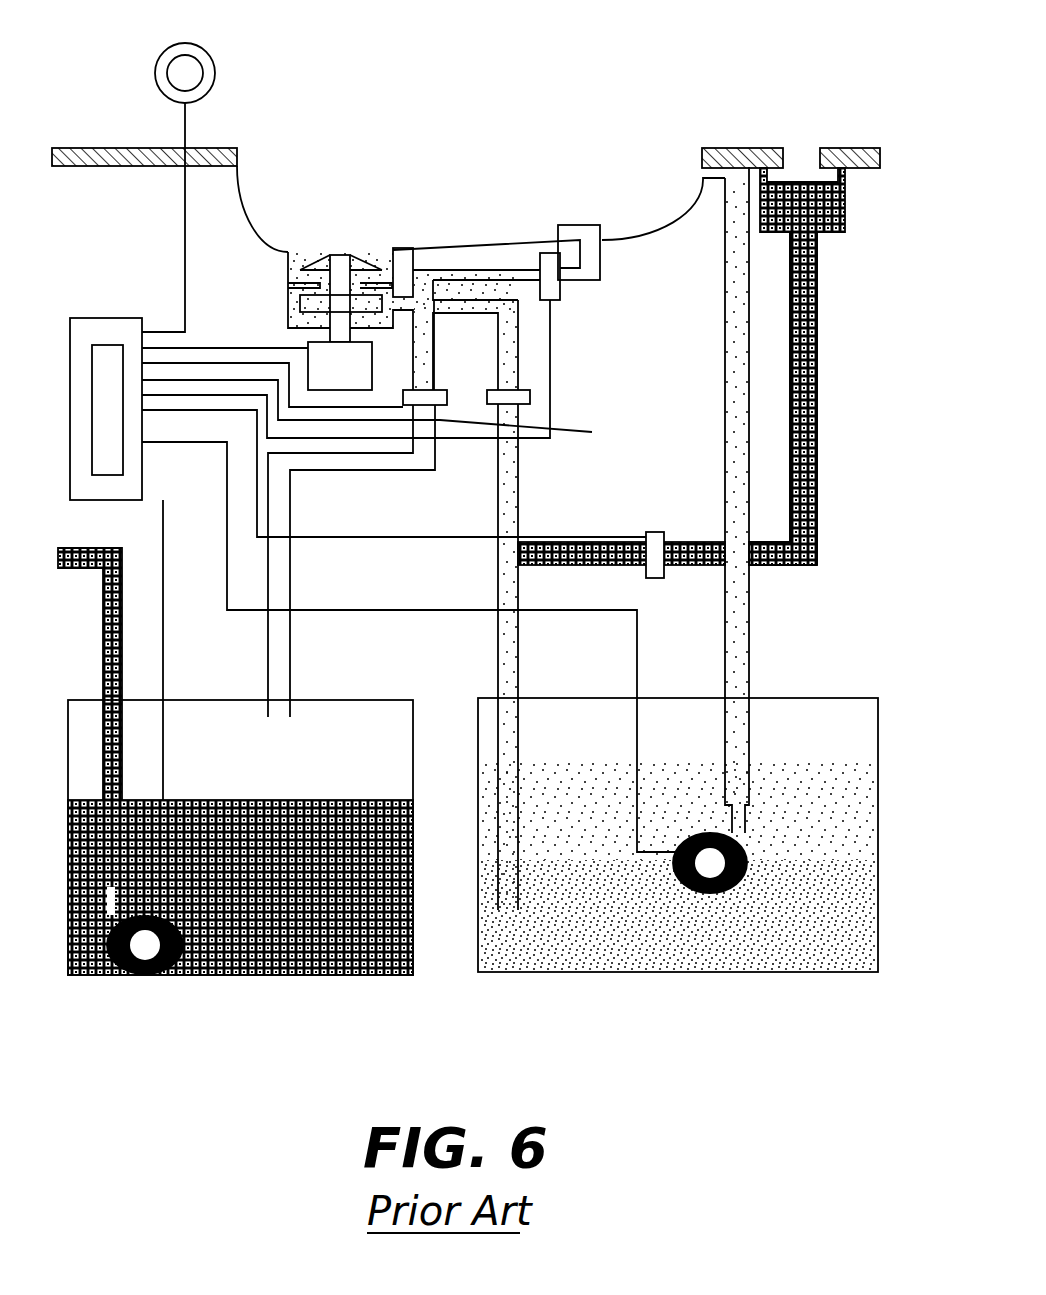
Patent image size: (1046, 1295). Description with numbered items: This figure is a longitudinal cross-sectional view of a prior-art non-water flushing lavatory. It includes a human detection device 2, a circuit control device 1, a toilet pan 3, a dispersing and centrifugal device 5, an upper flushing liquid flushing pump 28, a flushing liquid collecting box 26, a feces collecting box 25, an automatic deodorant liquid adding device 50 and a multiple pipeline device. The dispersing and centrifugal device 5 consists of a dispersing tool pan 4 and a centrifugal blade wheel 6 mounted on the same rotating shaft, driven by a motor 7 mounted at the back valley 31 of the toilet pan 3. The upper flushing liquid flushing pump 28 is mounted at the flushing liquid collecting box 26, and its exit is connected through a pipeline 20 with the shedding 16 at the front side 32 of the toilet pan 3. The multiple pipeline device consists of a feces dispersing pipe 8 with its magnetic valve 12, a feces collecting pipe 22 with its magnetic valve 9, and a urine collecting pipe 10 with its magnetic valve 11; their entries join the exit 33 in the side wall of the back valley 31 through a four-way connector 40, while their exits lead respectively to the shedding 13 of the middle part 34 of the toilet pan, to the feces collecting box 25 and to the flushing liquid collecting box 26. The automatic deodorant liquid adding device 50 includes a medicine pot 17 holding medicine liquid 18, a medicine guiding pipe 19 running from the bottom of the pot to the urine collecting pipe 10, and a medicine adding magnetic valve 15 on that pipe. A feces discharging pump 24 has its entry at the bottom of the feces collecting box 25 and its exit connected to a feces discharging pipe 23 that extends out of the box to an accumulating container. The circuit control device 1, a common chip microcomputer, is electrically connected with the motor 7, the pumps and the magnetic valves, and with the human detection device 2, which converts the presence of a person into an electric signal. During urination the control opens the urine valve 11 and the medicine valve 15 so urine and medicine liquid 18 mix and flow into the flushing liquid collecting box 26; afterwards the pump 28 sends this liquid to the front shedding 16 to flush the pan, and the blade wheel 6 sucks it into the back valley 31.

The circuit control device 1 is at (88, 318).
The human detection device 2 is at (163, 63).
The toilet pan 3 is at (250, 222).
The dispersing tool pan 4 is at (315, 270).
The dispersing and centrifugal device 5 is at (340, 252).
The centrifugal blade wheel 6 is at (372, 303).
The motor 7 is at (367, 375).
The feces dispersing pipe 8 is at (447, 267).
The magnetic valve of the feces collecting pipe 9 is at (435, 388).
The urine collecting pipe 10 is at (470, 298).
The magnetic valve of the urine collecting pipe 11 is at (390, 414).
The magnetic valve of the feces dispersing pipe 12 is at (550, 253).
The shedding of the middle part of the toilet pan 13 is at (583, 225).
The medicine adding magnetic valve 15 is at (651, 532).
The shedding at the front side of the toilet pan 16 is at (742, 167).
The medicine pot 17 is at (771, 180).
The medicine liquid 18 is at (812, 182).
The medicine guiding pipe 19 is at (817, 348).
The pipeline 20 is at (750, 583).
The feces collecting pipe 22 is at (269, 672).
The feces discharging pipe 23 is at (105, 762).
The feces discharging pump 24 is at (145, 975).
The feces collecting box 25 is at (318, 975).
The flushing liquid collecting box 26 is at (533, 972).
The upper flushing liquid flushing pump 28 is at (715, 893).
The back valley of the toilet pan 31 is at (288, 302).
The front side of the toilet pan 32 is at (673, 222).
The exit of the side wall of the back valley 33 is at (403, 293).
The middle part of the toilet pan 34 is at (520, 240).
The four-way connector 40 is at (415, 277).
The automatic deodorant liquid adding device 50 is at (836, 414).